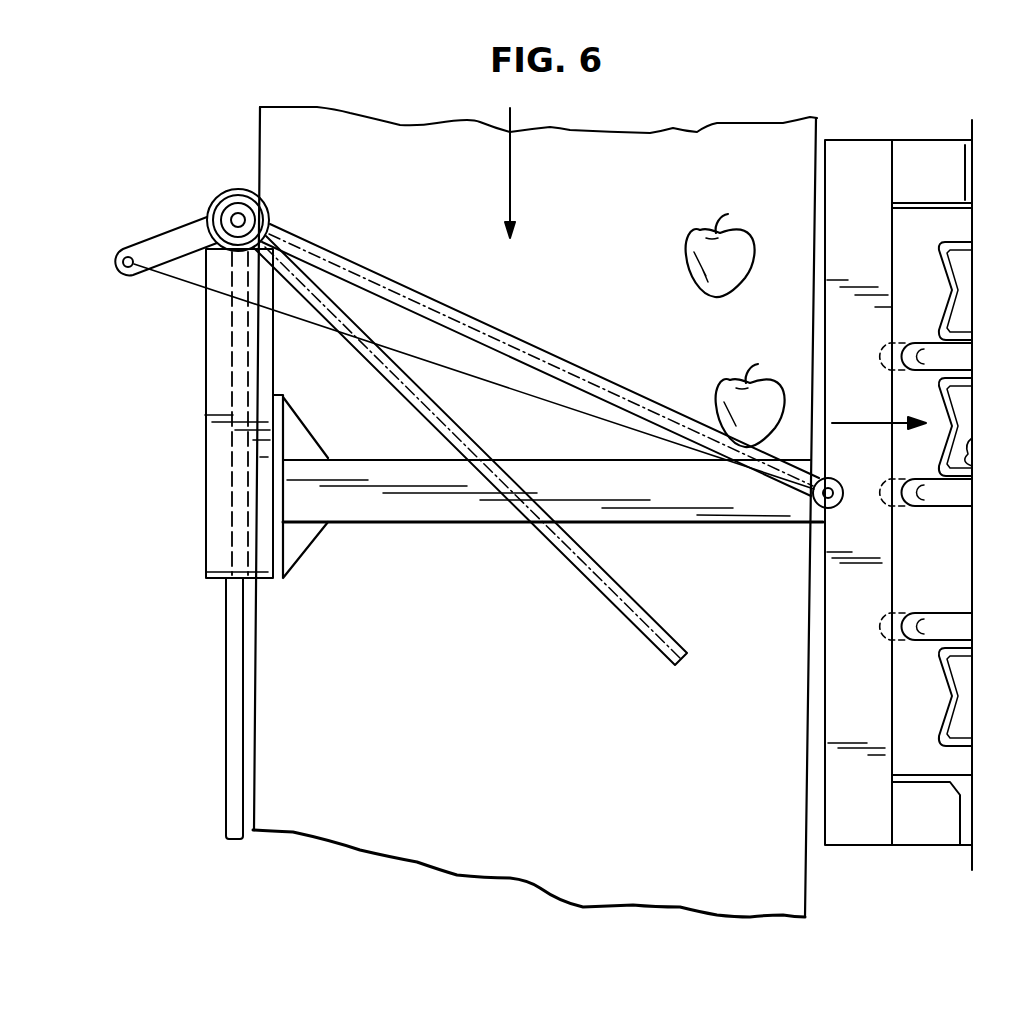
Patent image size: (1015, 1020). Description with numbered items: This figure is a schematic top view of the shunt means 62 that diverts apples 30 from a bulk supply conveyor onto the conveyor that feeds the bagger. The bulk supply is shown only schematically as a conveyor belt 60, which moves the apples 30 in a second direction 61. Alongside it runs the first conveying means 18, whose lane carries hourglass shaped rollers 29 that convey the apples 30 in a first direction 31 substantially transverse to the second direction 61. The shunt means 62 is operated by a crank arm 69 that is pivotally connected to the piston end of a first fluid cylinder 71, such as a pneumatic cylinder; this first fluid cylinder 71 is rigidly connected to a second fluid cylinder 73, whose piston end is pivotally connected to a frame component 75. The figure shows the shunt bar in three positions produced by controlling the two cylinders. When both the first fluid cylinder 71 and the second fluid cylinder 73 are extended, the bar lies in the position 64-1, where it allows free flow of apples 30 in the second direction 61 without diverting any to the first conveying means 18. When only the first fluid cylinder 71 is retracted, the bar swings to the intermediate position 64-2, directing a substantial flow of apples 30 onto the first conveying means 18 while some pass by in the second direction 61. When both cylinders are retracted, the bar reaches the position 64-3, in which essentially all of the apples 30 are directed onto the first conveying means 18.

The conveyor belt 60 is at (284, 122).
The second direction 61 is at (510, 160).
The shunt means 62 is at (201, 182).
The crank arm 69 is at (159, 244).
The first fluid cylinder 71 is at (213, 413).
The second fluid cylinder 73 is at (240, 413).
The bar position (both cylinders extended) 64-1 is at (228, 622).
The bar intermediate position 64-2 is at (540, 520).
The bar position (both cylinders retracted) 64-3 is at (550, 358).
The frame component 75 is at (822, 506).
The apples 30 is at (748, 248).
The first conveying means 18 is at (908, 545).
The hourglass shaped rollers 29 is at (947, 655).
The first direction 31 is at (868, 423).